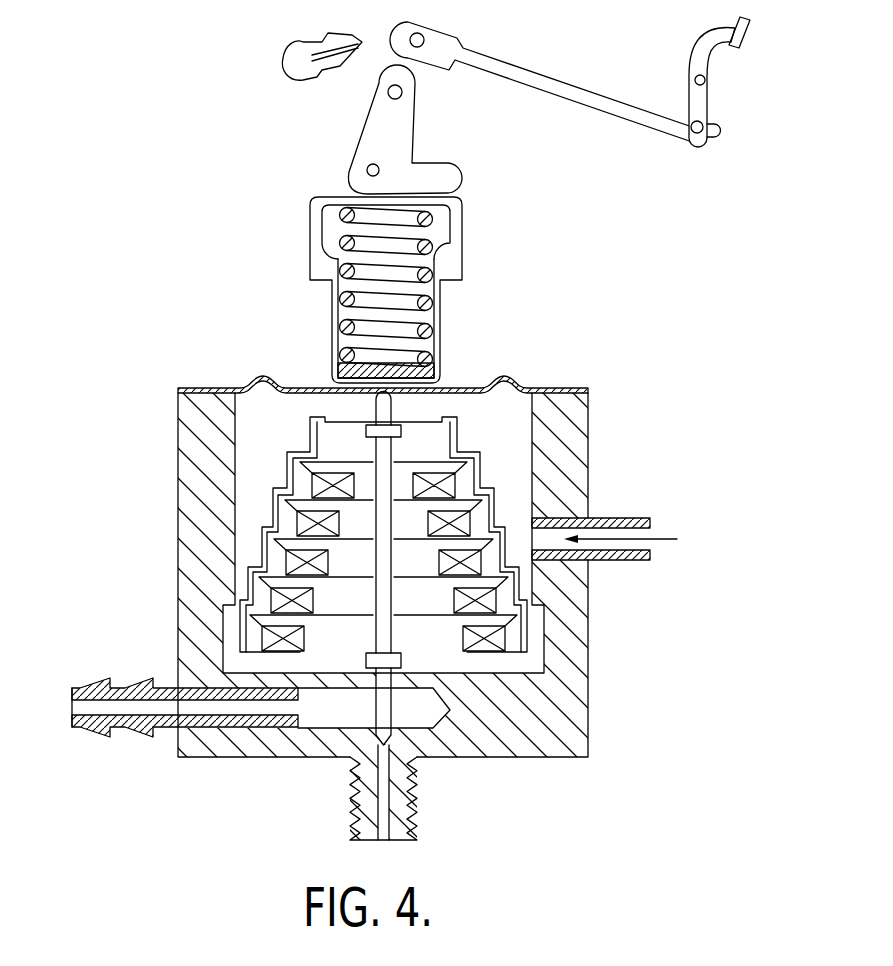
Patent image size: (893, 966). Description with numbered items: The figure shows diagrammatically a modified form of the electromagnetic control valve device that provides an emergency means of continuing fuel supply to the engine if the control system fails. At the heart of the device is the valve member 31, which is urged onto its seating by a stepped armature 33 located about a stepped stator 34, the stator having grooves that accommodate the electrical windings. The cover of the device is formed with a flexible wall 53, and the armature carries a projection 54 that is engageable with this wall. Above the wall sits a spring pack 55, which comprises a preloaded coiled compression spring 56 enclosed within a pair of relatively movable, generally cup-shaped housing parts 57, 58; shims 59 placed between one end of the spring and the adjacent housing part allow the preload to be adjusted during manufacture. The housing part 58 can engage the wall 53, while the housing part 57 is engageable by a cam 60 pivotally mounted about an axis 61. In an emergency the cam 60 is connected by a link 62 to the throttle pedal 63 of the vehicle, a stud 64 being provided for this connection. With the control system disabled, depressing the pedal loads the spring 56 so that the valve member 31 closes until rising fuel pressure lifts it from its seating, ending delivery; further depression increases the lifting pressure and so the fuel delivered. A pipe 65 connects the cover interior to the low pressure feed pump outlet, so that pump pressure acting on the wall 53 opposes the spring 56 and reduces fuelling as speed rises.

The valve member 31 is at (382, 683).
The stepped armature 33 is at (283, 486).
The stepped stator 34 is at (417, 598).
The flexible wall 53 is at (476, 396).
The projection 54 is at (390, 410).
The spring pack 55 is at (270, 309).
The coiled compression spring 56 is at (424, 307).
The housing part 57 is at (309, 223).
The housing part 58 is at (331, 336).
The shims 59 is at (405, 372).
The cam 60 is at (370, 142).
The axis 61 is at (379, 168).
The link 62 is at (557, 95).
The throttle pedal 63 is at (702, 58).
The stud 64 is at (341, 62).
The pipe 65 is at (628, 518).